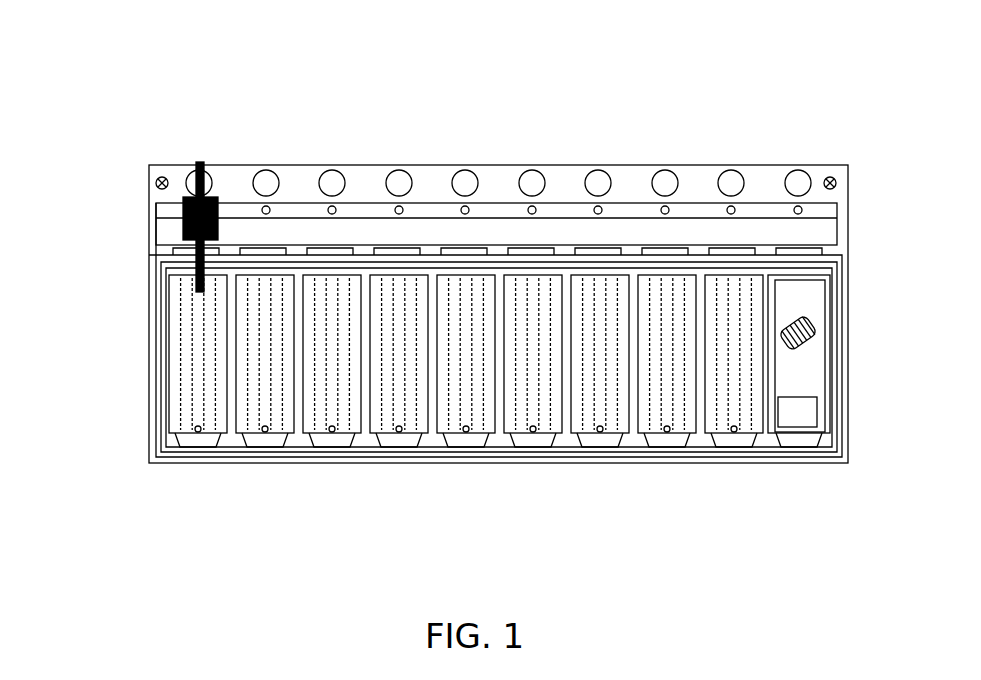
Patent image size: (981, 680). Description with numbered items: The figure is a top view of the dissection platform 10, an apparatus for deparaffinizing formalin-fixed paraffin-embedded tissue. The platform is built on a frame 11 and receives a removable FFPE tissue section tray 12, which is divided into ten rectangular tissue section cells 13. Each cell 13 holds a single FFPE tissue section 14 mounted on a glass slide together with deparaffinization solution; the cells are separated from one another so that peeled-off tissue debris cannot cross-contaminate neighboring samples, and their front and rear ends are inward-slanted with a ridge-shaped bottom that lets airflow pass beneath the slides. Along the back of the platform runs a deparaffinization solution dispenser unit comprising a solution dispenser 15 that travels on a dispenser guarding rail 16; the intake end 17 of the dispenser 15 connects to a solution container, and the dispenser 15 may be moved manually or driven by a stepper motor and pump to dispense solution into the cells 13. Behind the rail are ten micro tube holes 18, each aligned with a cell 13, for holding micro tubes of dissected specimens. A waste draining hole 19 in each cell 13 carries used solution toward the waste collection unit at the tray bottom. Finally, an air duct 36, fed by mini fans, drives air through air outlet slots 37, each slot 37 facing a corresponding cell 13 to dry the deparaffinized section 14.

The dissection platform 10 is at (453, 100).
The frame 11 is at (177, 463).
The removable FFPE tissue section tray 12 is at (567, 437).
The tissue section cell 13 is at (725, 400).
The FFPE tissue section 14 is at (803, 338).
The solution dispenser 15 is at (182, 235).
The dispenser guarding rail 16 is at (166, 211).
The intake end 17 is at (204, 162).
The micro tube hole 18 is at (263, 178).
The waste draining hole 19 is at (194, 433).
The air duct 36 is at (618, 230).
The air outlet slot 37 is at (381, 253).